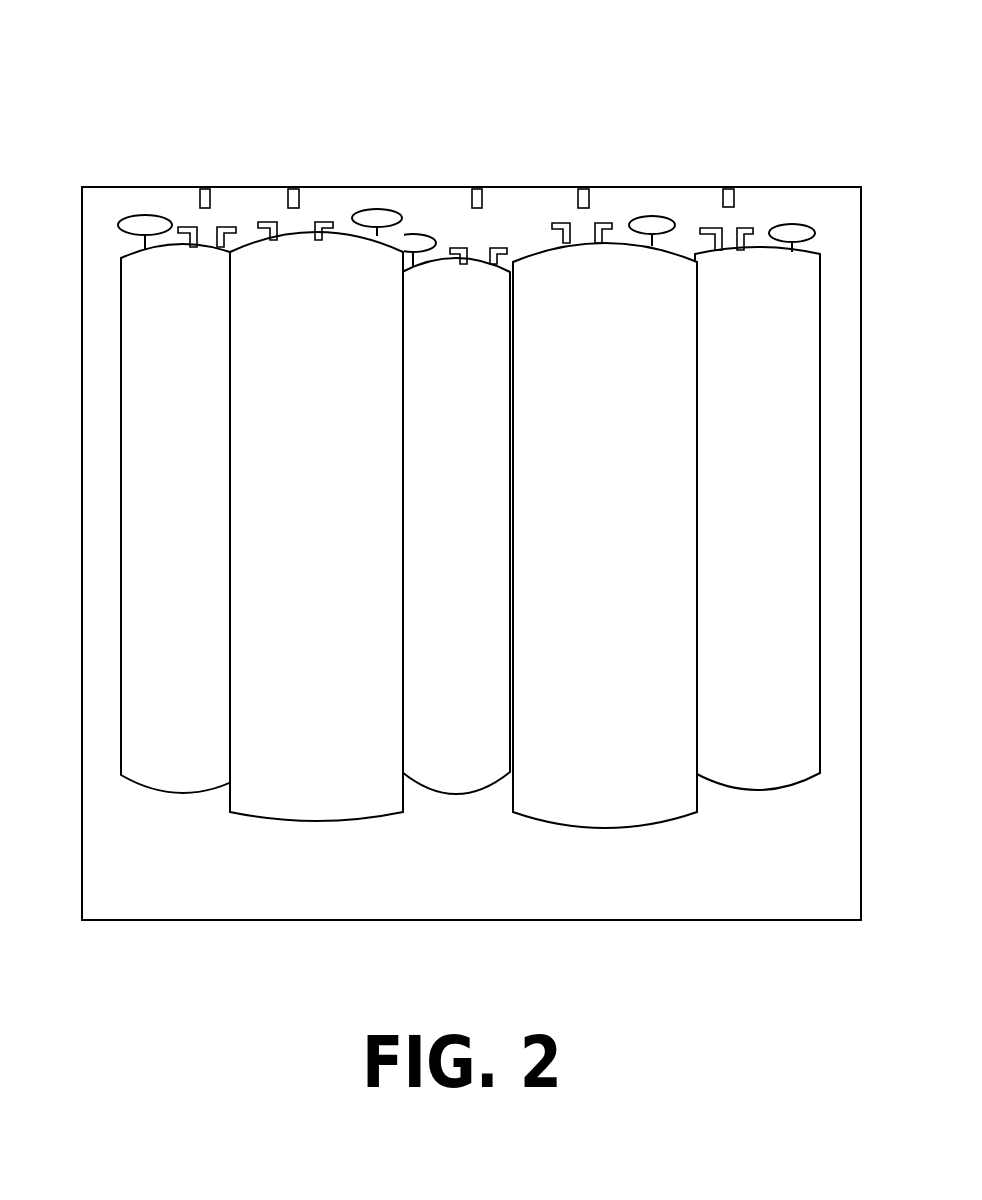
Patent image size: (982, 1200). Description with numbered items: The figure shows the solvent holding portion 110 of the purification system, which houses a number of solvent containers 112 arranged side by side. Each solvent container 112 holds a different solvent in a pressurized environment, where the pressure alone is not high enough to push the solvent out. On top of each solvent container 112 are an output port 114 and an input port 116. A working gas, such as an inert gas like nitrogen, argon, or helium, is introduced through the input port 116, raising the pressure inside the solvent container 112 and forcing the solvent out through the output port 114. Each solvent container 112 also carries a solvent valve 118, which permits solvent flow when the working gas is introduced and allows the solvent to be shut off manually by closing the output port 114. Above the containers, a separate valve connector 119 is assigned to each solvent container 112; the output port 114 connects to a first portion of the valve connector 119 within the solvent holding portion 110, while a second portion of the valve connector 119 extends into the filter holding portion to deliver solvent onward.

The solvent holding portion 110 is at (500, 908).
The solvent container 112 is at (152, 599).
The output port 114 is at (182, 220).
The input port 116 is at (228, 222).
The solvent valve 118 is at (138, 210).
The valve connector 119 is at (206, 184).